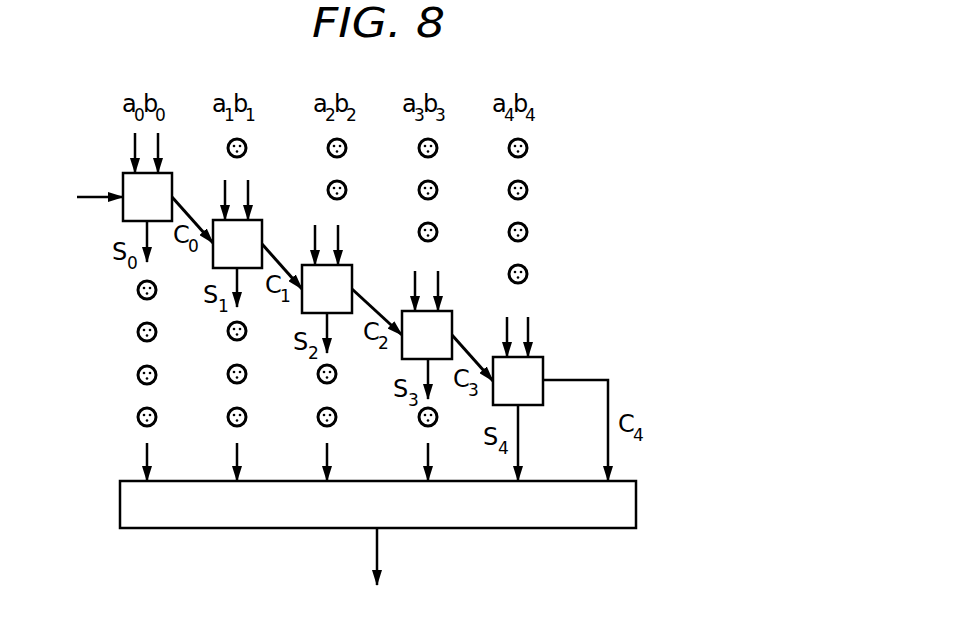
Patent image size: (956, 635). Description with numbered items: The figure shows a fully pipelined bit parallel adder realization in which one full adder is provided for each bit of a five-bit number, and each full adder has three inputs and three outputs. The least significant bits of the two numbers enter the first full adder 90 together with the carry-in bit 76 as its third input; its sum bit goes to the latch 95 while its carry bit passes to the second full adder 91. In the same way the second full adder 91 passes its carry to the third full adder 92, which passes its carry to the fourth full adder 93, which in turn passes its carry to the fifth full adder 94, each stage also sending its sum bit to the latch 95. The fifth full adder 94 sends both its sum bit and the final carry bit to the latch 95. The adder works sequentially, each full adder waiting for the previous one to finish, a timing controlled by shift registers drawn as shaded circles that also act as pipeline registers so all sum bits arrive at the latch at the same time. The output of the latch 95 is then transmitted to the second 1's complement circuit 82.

The carry-in bit 76 is at (87, 196).
The first full adder 90 is at (172, 180).
The second full adder 91 is at (262, 229).
The third full adder 92 is at (352, 276).
The fourth full adder 93 is at (452, 320).
The fifth full adder 94 is at (543, 366).
The latch 95 is at (120, 512).
The second 1's complement circuit 82 is at (376, 573).